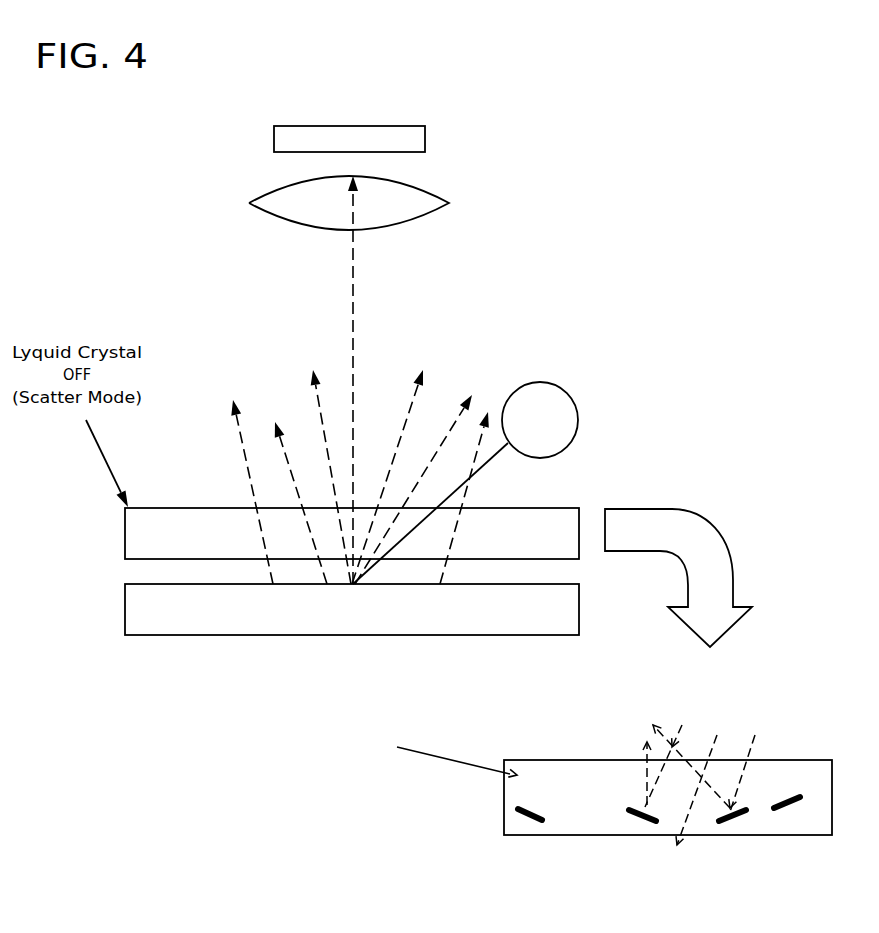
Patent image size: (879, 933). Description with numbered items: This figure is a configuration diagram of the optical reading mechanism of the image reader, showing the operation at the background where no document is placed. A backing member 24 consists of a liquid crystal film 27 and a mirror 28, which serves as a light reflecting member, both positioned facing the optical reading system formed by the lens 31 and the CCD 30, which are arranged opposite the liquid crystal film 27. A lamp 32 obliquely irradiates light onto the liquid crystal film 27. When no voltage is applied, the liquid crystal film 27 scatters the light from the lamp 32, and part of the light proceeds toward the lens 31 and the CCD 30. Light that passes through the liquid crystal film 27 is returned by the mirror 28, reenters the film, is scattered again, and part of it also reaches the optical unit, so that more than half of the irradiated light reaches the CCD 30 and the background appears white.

The backing member 24 is at (438, 669).
The liquid crystal film 27 is at (125, 528).
The mirror 28 is at (318, 640).
The CCD 30 is at (413, 126).
The lens 31 is at (432, 189).
The lamp 32 is at (574, 392).